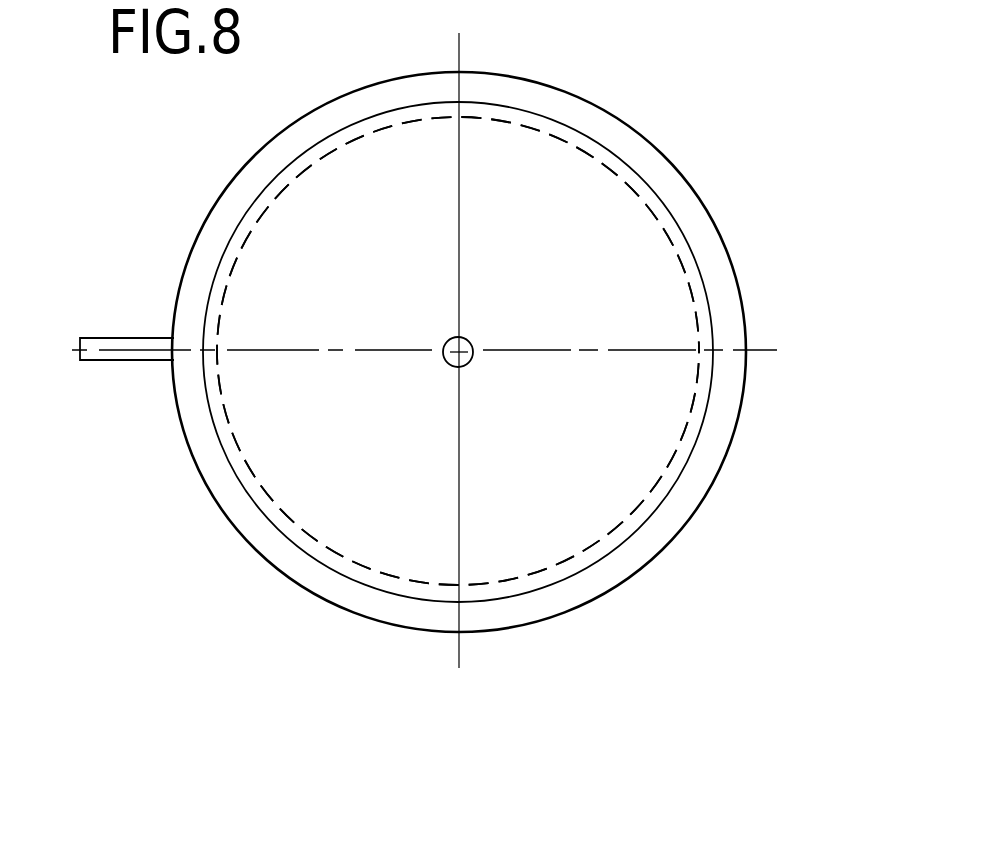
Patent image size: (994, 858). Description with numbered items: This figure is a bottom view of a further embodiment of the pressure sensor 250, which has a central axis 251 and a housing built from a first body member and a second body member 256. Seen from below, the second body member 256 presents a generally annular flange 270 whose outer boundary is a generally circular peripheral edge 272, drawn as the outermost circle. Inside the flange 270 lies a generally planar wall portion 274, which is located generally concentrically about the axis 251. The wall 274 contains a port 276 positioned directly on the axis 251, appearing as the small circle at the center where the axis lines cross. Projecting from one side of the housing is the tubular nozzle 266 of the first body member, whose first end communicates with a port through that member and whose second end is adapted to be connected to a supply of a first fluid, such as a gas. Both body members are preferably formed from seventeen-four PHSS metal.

The pressure sensor 250 is at (436, 348).
The central axis 251 is at (448, 362).
The second body member 256 is at (665, 278).
The tubular nozzle 266 is at (122, 338).
The annular flange 270 is at (730, 315).
The peripheral edge 272 is at (738, 282).
The wall portion 274 is at (672, 402).
The port 276 is at (467, 343).